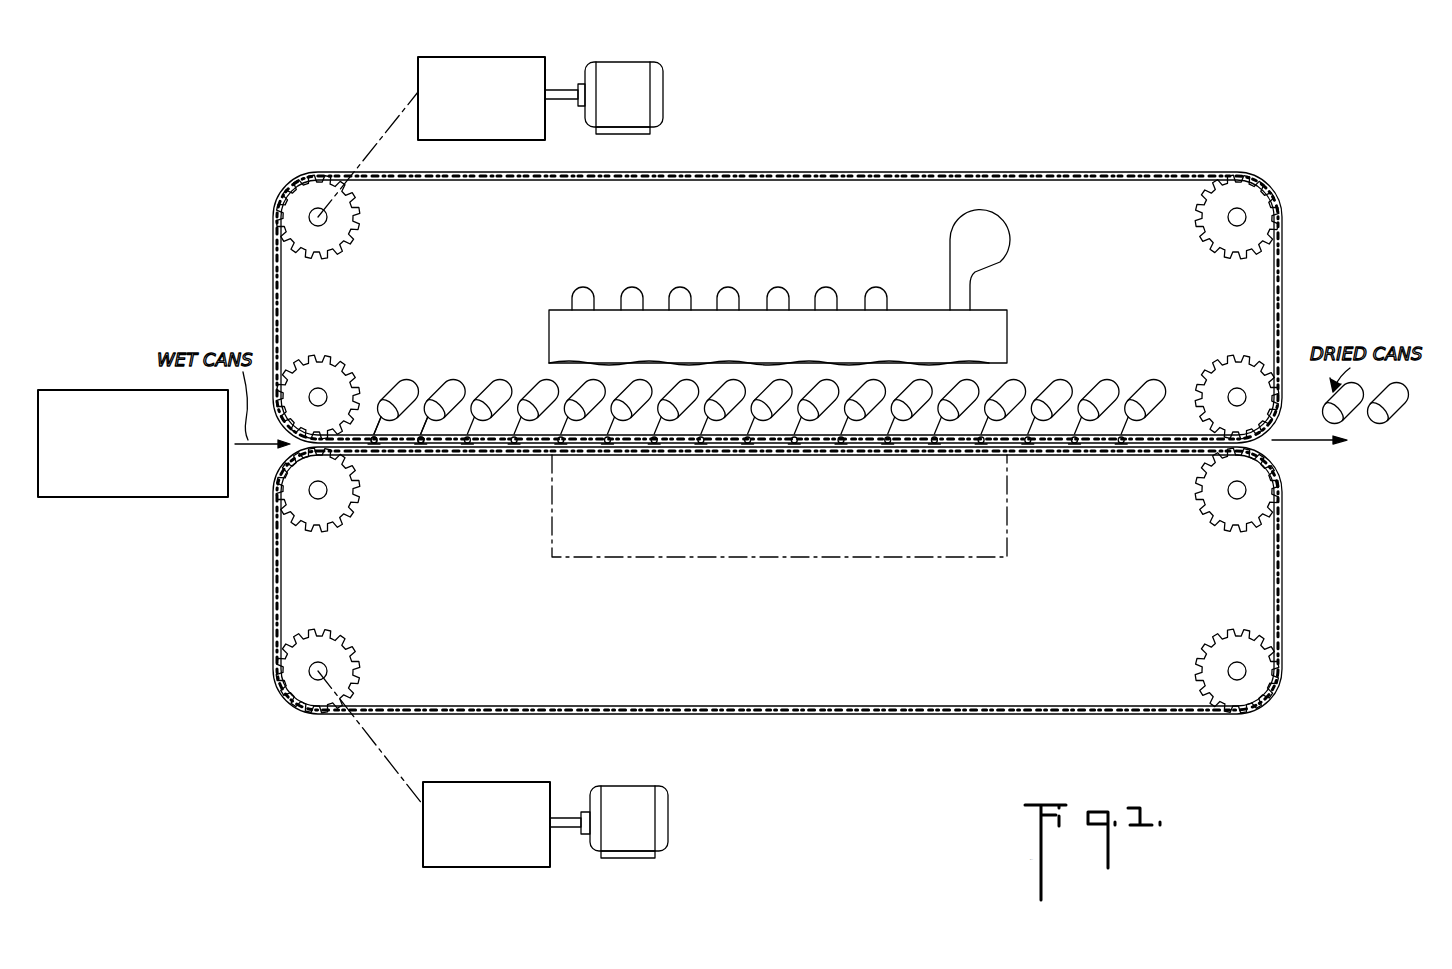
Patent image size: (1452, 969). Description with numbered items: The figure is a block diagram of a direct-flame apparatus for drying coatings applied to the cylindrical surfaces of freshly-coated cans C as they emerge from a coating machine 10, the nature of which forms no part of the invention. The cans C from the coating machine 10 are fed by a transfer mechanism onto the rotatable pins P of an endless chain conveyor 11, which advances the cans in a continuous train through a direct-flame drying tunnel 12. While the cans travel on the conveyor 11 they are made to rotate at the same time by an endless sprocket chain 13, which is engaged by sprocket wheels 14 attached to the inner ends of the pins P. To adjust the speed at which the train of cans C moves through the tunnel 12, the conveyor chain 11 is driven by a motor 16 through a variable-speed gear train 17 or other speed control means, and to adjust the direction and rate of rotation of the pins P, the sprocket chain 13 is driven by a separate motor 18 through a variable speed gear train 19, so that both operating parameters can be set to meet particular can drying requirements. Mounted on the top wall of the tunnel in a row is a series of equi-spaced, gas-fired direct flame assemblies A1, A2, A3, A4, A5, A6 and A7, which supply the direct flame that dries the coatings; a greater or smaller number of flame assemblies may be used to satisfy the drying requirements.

The coating machine 10 is at (98, 392).
The endless chain conveyor 11 is at (282, 288).
The direct-flame drying tunnel 12 is at (548, 322).
The endless sprocket chain 13 is at (285, 578).
The sprocket wheels 14 is at (425, 455).
The motor 16 is at (630, 70).
The variable-speed gear train 17 is at (470, 66).
The motor 18 is at (620, 800).
The variable speed gear train 19 is at (488, 795).
The cans C is at (458, 388).
The rotatable pins P is at (483, 456).
The gas-fired direct flame assembly A1 is at (583, 288).
The gas-fired direct flame assembly A2 is at (632, 288).
The gas-fired direct flame assembly A3 is at (680, 288).
The gas-fired direct flame assembly A4 is at (728, 288).
The gas-fired direct flame assembly A5 is at (778, 288).
The gas-fired direct flame assembly A6 is at (826, 288).
The gas-fired direct flame assembly A7 is at (876, 288).